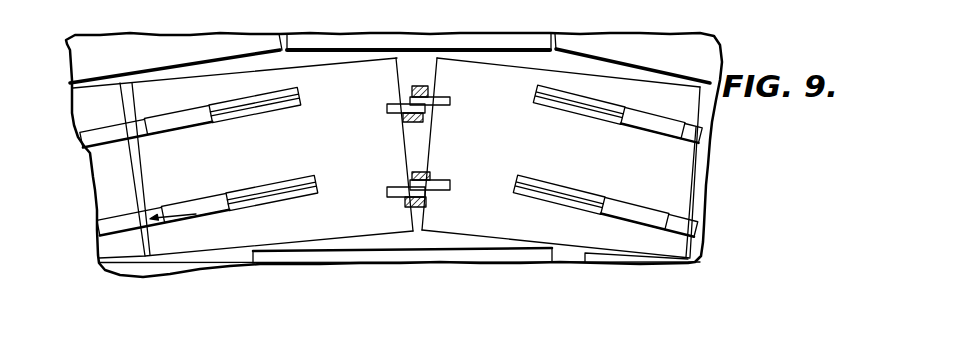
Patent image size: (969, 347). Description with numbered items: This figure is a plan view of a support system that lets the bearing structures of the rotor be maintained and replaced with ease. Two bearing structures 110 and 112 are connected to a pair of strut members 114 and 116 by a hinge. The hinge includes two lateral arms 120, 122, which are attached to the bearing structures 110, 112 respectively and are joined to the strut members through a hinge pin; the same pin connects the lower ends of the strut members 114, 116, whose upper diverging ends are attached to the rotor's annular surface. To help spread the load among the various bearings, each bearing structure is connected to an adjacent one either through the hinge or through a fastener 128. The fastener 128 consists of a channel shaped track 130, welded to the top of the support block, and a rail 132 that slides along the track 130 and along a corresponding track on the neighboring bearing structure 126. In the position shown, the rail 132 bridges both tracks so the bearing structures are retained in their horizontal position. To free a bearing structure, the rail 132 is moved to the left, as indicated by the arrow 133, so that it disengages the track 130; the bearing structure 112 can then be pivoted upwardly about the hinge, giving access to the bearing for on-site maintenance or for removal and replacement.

The bearing structure 110 is at (487, 77).
The bearing structure 112 is at (338, 65).
The strut member 114 is at (424, 207).
The strut member 116 is at (428, 172).
The lateral arm 120 is at (443, 181).
The lateral arm 122 is at (390, 197).
The bearing structure 126 is at (103, 181).
The fastener 128 is at (222, 190).
The channel shaped track 130 is at (290, 185).
The rail 132 is at (193, 208).
The arrow 133 is at (180, 180).